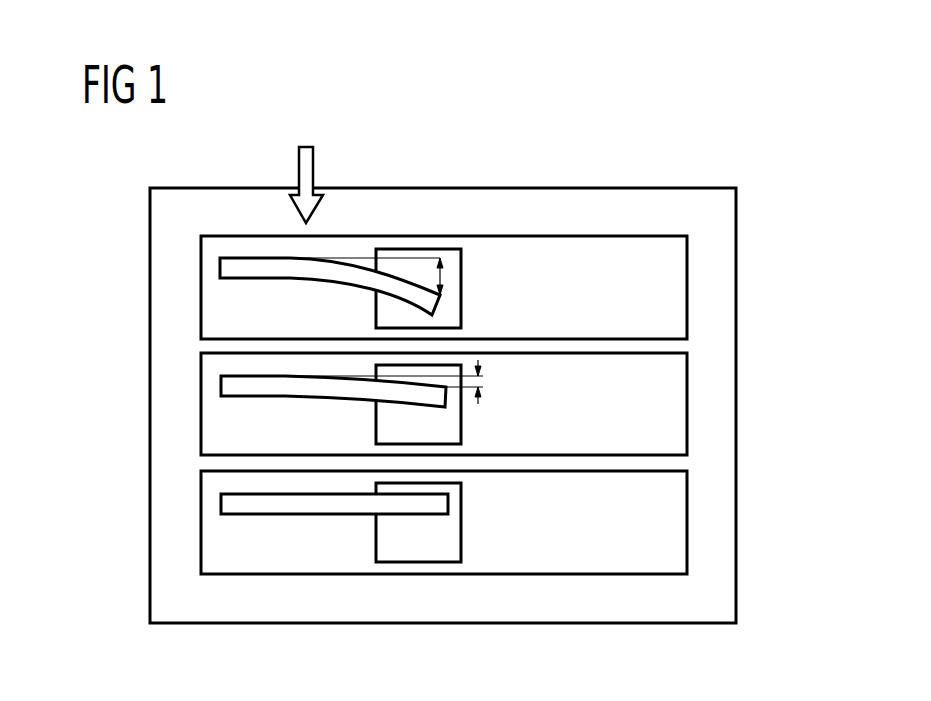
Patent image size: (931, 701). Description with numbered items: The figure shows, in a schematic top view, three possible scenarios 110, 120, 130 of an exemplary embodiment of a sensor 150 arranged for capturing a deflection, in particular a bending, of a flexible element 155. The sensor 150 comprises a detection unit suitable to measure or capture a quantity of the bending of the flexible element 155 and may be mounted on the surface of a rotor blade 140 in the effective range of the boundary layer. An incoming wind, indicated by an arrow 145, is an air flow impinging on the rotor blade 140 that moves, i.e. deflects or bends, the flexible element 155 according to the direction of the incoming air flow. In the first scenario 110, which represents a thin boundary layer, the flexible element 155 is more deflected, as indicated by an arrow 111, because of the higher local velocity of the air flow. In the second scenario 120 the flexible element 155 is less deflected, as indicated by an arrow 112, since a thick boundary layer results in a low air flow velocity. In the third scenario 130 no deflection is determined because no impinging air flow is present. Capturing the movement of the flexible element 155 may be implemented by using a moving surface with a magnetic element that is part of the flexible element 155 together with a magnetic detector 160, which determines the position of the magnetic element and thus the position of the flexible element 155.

The first scenario 110 is at (183, 288).
The arrow indicating deflection 111 is at (440, 277).
The arrow indicating deflection 112 is at (483, 383).
The second scenario 120 is at (183, 405).
The third scenario 130 is at (183, 522).
The rotor blade 140 is at (618, 188).
The arrow indicating incoming wind 145 is at (299, 163).
The sensor 150 is at (687, 283).
The flexible element 155 is at (285, 268).
The magnetic detector 160 is at (461, 312).